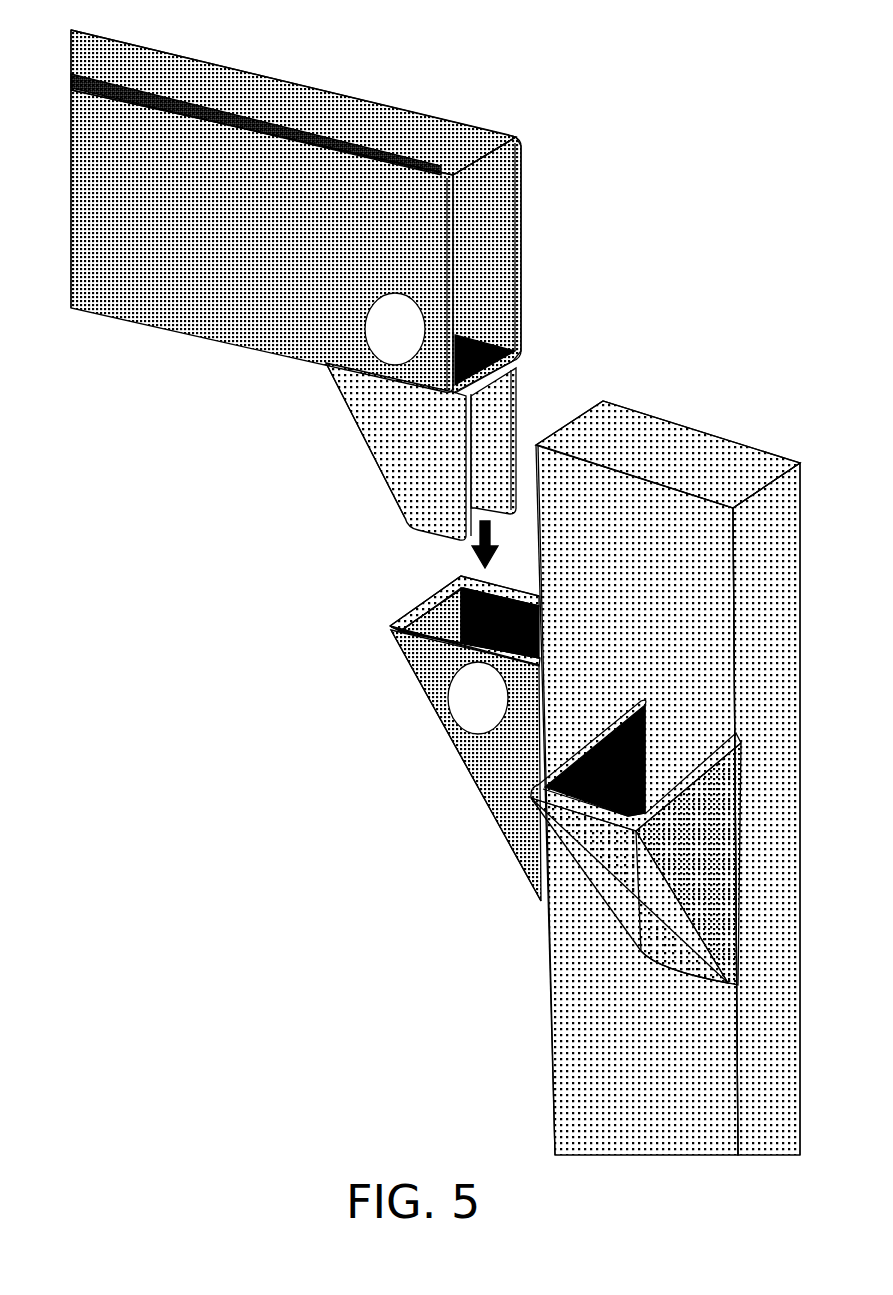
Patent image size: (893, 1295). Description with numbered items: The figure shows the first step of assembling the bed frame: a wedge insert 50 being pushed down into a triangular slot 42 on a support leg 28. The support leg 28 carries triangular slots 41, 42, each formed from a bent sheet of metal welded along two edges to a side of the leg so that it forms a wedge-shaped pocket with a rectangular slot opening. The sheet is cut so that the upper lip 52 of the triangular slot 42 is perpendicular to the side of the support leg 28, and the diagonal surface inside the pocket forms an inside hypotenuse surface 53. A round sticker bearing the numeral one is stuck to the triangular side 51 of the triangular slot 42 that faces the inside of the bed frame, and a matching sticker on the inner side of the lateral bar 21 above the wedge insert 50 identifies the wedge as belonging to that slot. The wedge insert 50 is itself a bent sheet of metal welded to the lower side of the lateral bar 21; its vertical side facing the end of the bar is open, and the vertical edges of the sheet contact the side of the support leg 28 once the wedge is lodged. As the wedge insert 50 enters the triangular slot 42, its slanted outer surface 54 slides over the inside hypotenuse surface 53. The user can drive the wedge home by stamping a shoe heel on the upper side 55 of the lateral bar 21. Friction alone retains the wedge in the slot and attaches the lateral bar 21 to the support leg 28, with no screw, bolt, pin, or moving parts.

The lateral bar 21 is at (437, 111).
The upper side of lateral bar 55 is at (262, 241).
The wedge insert 50 is at (340, 397).
The slanted outer surface of wedge insert 54 is at (368, 458).
The upper lip of triangular slot 52 is at (503, 583).
The triangular slot 42 is at (398, 615).
The inside hypotenuse surface 53 is at (465, 621).
The triangular side of triangular slot 51 is at (466, 765).
The triangular slot 41 is at (527, 792).
The support leg 28 is at (713, 426).